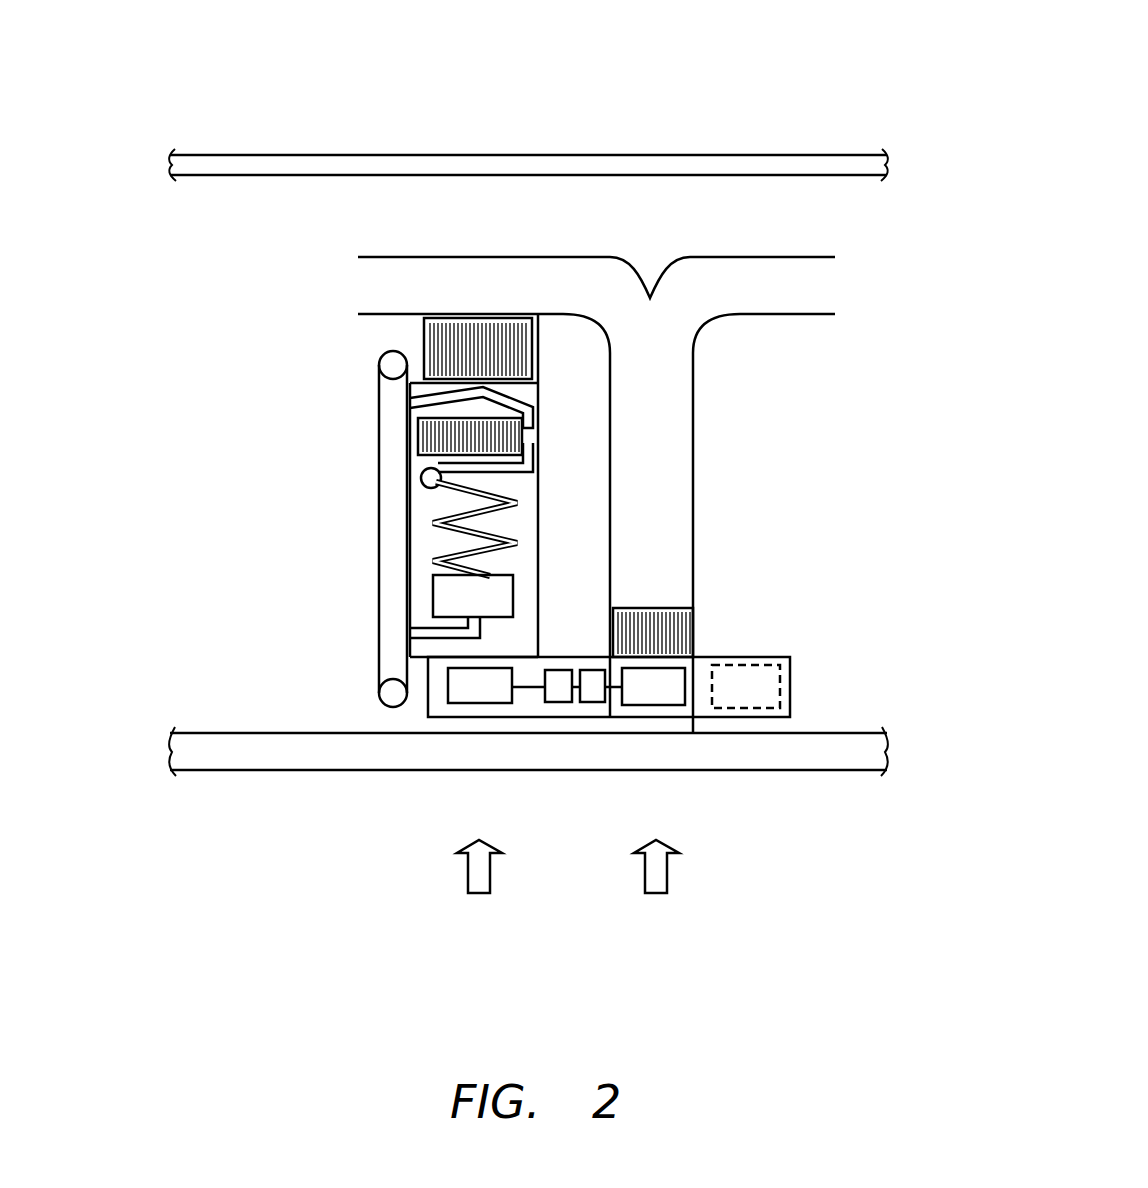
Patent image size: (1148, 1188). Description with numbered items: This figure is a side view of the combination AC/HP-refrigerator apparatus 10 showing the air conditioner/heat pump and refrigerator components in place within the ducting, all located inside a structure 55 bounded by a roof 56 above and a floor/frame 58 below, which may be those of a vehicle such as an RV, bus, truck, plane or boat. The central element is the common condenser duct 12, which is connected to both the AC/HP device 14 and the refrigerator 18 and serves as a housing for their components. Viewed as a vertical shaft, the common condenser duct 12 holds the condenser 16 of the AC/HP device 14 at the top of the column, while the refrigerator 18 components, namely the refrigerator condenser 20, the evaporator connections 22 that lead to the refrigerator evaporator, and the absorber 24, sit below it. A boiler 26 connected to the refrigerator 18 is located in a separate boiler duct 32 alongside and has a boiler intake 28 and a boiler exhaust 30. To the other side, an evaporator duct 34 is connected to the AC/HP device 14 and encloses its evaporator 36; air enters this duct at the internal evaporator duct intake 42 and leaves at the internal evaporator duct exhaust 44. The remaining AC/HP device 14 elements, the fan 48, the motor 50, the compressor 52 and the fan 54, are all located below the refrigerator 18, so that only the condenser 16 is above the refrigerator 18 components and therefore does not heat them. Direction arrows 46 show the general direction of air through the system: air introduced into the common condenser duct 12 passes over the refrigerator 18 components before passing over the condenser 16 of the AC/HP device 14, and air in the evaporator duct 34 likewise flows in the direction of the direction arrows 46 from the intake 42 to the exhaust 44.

The combination AC/HP-refrigerator apparatus 10 is at (170, 477).
The common condenser duct 12 is at (537, 398).
The AC/HP device 14 is at (592, 718).
The condenser 16 is at (517, 343).
The refrigerator 18 is at (535, 590).
The condenser 20 is at (522, 437).
The evaporator connections 22 is at (422, 476).
The absorber 24 is at (463, 560).
The boiler 26 is at (388, 498).
The boiler intake 28 is at (378, 693).
The boiler exhaust 30 is at (381, 356).
The boiler duct 32 is at (378, 565).
The evaporator duct 34 is at (700, 332).
The evaporator 36 is at (685, 630).
The evaporator duct intake 42 is at (750, 690).
The evaporator duct exhaust 44 is at (463, 275).
The direction arrows 46 is at (475, 895).
The fan 48 is at (462, 690).
The motor 50 is at (558, 700).
The compressor 52 is at (598, 695).
The fan 54 is at (665, 693).
The structure 55 is at (838, 98).
The roof 56 is at (470, 153).
The floor/frame 58 is at (222, 762).